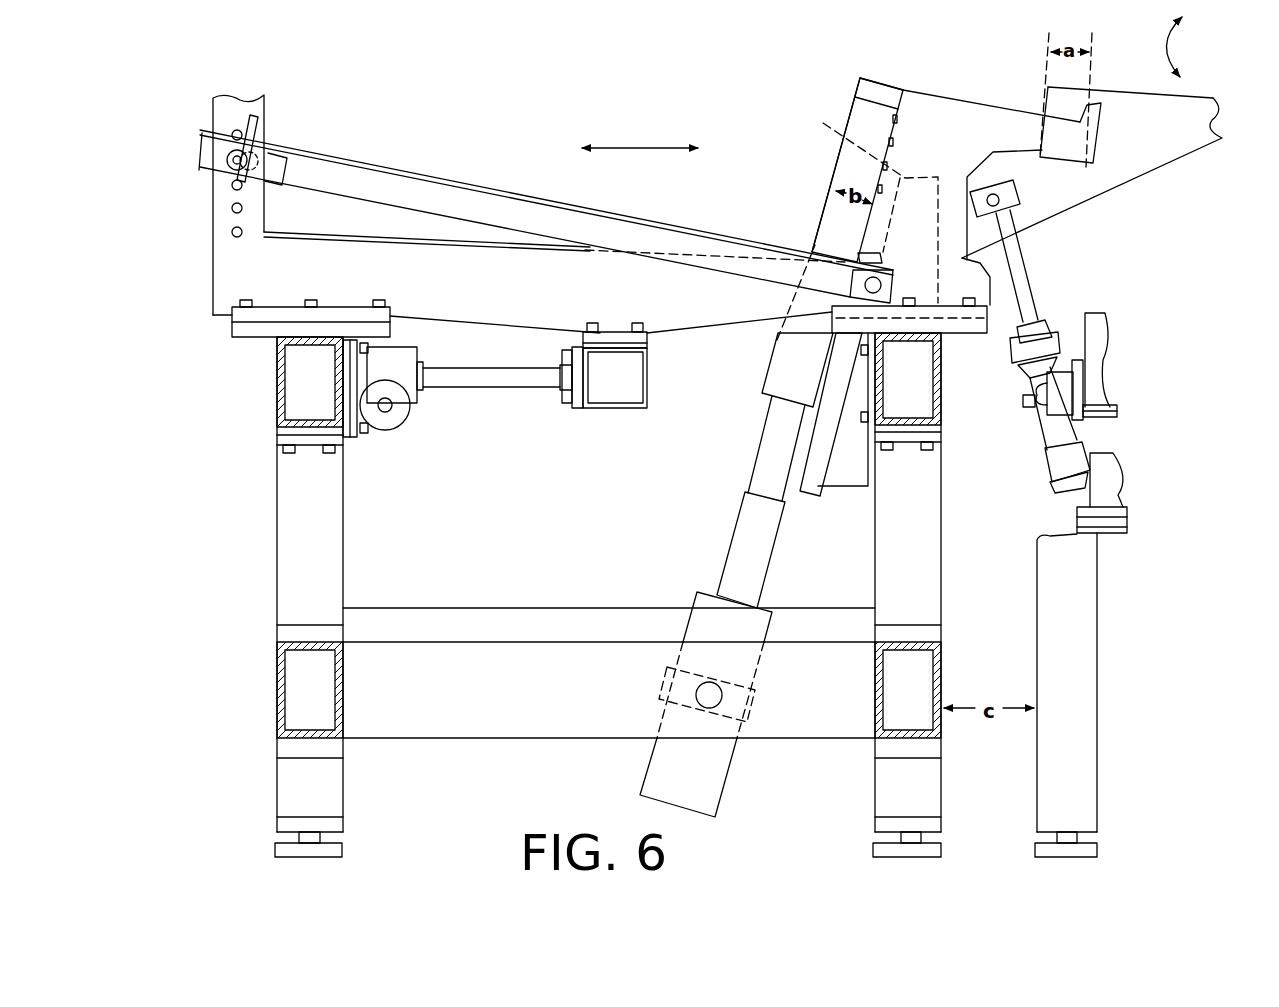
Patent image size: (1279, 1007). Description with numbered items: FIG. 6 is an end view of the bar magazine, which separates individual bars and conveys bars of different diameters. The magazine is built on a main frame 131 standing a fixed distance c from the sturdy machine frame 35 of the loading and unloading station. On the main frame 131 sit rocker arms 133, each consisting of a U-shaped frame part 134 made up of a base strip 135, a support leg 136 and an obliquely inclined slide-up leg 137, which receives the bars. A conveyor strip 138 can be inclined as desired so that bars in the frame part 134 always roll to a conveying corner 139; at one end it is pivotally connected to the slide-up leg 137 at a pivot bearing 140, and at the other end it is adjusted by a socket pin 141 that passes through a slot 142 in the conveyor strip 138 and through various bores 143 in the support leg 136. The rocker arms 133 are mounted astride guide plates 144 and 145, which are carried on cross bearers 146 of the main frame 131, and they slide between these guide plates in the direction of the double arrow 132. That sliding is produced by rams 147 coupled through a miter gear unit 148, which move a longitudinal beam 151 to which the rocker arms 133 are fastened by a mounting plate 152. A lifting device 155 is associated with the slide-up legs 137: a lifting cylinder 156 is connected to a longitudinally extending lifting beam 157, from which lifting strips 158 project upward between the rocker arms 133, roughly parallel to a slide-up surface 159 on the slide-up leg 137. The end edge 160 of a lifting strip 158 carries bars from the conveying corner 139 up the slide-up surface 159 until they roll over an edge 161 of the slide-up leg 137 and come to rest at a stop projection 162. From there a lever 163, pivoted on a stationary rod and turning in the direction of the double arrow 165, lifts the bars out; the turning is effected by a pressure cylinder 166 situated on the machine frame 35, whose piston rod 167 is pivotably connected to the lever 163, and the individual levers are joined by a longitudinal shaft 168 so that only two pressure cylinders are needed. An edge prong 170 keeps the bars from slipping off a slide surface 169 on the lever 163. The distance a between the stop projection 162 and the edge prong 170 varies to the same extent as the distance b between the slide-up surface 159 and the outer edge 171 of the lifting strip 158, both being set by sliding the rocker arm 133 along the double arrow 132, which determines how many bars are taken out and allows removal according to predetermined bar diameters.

The machine frame 35 is at (1105, 657).
The main frame 131 is at (949, 582).
The double arrow 132 is at (628, 149).
The rocker arm 133 is at (470, 176).
The U-shaped frame part 134 is at (297, 217).
The base strip 135 is at (522, 294).
The support leg 136 is at (257, 108).
The slide-up leg 137 is at (861, 200).
The conveyor strip 138 is at (387, 183).
The conveying corner 139 is at (857, 260).
The bearing 140 is at (907, 257).
The socket pin 141 is at (222, 150).
The slot 142 is at (202, 168).
The bores 143 is at (232, 213).
The guide plate 144 is at (253, 330).
The guide plate 145 is at (965, 325).
The cross bearer 146 is at (288, 413).
The ram 147 is at (487, 378).
The miter gear unit 148 is at (407, 362).
The longitudinal beam 151 is at (618, 392).
The mounting plate 152 is at (607, 337).
The lifting device 155 is at (790, 514).
The lifting cylinder 156 is at (717, 603).
The lifting beam 157 is at (767, 417).
The lifting strip 158 is at (850, 160).
The slide-up surface 159 is at (887, 105).
The end edge 160 is at (883, 87).
The edge 161 is at (903, 92).
The stop projection 162 is at (1100, 112).
The lever 163 is at (1195, 101).
The double arrow 165 is at (1165, 41).
The pressure cylinder 166 is at (1049, 316).
The piston rod 167 is at (1015, 273).
The longitudinal shaft 168 is at (999, 203).
The slide surface 169 is at (1123, 92).
The edge prong 170 is at (1048, 88).
The cylinder edge 171 is at (823, 212).